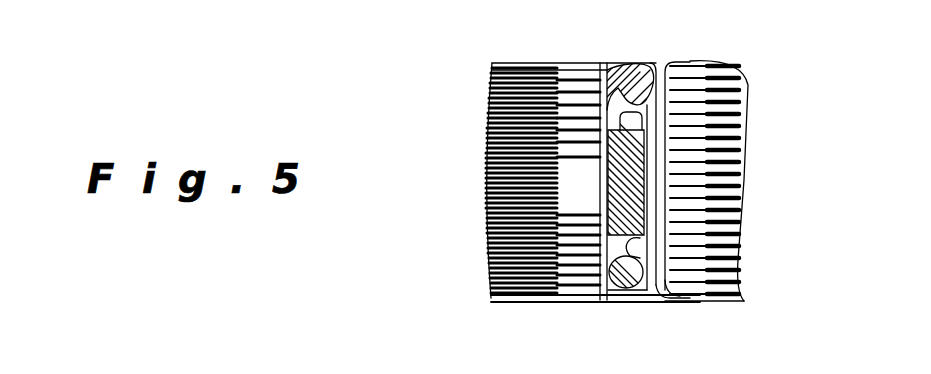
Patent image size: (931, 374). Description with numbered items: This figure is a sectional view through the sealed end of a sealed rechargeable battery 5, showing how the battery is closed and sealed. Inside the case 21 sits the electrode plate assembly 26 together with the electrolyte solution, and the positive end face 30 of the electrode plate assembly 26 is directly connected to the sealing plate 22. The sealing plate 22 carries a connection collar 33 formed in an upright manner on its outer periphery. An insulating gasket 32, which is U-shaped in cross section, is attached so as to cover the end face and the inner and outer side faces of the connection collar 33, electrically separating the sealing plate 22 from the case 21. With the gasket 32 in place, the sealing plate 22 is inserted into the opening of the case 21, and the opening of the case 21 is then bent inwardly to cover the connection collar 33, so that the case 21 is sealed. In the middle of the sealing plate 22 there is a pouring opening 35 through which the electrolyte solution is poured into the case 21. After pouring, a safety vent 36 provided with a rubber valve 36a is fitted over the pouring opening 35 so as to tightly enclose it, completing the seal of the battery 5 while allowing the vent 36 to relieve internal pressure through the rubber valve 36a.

The sealed rechargeable battery 5 is at (515, 62).
The case 21 is at (535, 303).
The sealing plate 22 is at (615, 303).
The electrode plate assembly 26 is at (602, 190).
The positive end face 30 is at (580, 303).
The insulating gasket 32 is at (628, 66).
The connection collar 33 is at (600, 70).
The pouring opening 35 is at (497, 241).
The safety vent 36 is at (655, 162).
The rubber valve 36a is at (605, 150).